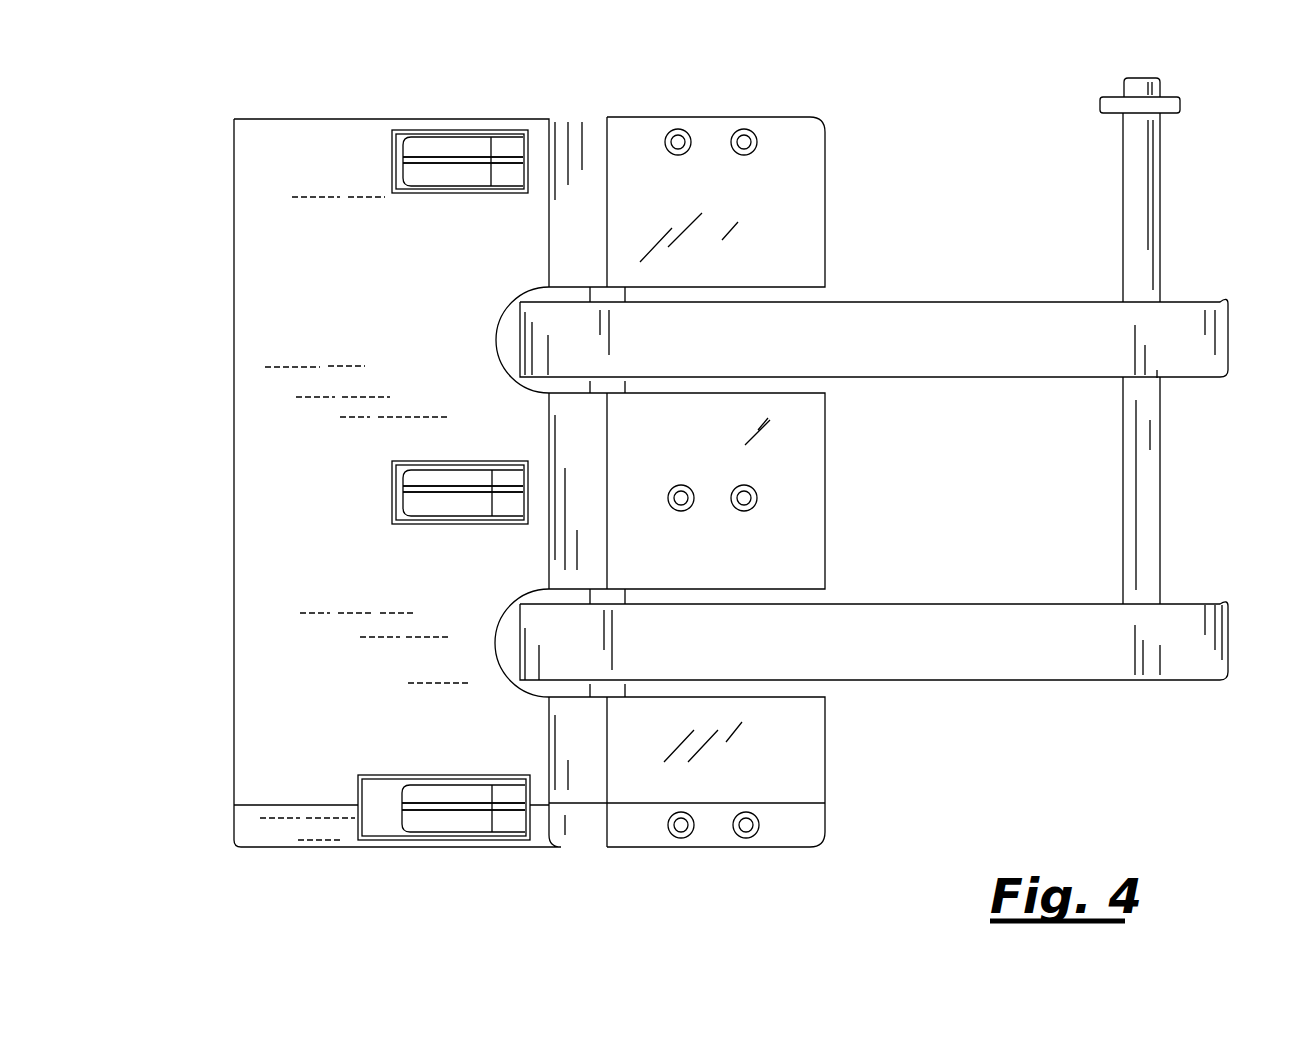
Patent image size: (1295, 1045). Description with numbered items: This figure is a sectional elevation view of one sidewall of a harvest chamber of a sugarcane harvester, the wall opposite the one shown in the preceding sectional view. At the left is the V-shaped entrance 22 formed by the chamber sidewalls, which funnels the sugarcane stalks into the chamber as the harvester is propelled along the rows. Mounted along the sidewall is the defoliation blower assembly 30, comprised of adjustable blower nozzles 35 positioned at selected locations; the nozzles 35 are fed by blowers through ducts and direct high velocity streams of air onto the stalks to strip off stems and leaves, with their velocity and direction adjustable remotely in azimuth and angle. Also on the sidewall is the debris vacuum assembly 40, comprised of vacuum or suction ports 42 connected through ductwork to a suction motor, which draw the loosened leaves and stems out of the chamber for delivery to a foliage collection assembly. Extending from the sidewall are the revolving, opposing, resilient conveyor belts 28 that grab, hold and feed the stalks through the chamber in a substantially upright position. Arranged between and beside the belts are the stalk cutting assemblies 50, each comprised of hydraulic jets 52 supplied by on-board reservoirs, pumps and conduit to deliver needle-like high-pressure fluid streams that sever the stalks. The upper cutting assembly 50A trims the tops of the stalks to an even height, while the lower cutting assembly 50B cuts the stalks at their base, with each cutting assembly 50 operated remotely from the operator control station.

The V-shaped entrance 22 is at (280, 676).
The conveyor belts 28 is at (978, 325).
The defoliation blower assembly 30 is at (483, 150).
The blower nozzles 35 is at (403, 152).
The debris vacuum assembly 40 is at (492, 820).
The vacuum or suction ports 42 is at (433, 806).
The stalk cutting assembly 50 is at (710, 508).
The upper cutting assembly 50A is at (705, 130).
The lower cutting assembly 50B is at (722, 828).
The hydraulic jets 52 is at (744, 142).